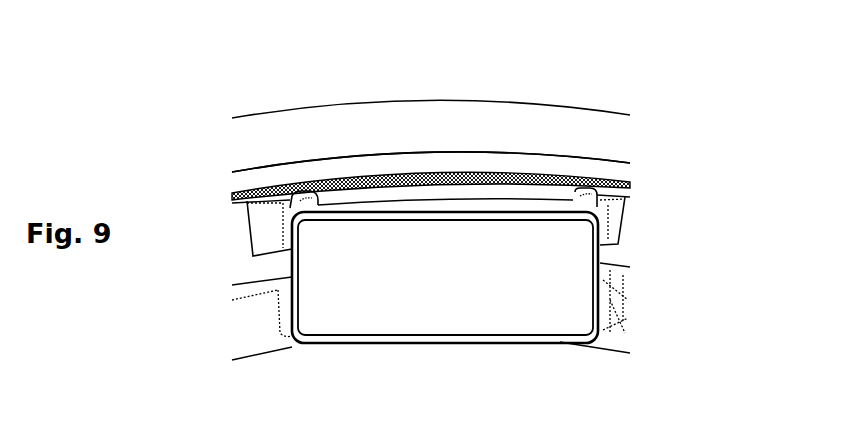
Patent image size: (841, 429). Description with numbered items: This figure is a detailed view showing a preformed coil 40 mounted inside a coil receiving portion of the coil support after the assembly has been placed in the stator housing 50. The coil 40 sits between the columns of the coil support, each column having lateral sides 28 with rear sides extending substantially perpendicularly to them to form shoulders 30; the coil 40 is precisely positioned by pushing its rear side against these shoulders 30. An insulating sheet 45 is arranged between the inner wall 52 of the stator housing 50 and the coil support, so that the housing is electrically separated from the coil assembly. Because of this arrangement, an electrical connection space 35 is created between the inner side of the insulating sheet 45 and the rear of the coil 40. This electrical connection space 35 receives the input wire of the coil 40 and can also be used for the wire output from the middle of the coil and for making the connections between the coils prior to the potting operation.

The stator housing 50 is at (262, 68).
The inner wall of the stator housing 52 is at (353, 151).
The electrical connection space 35 is at (461, 178).
The insulating sheet 45 is at (512, 178).
The shoulder 30 is at (307, 207).
The lateral side 28 is at (292, 232).
The coil 40 is at (453, 295).